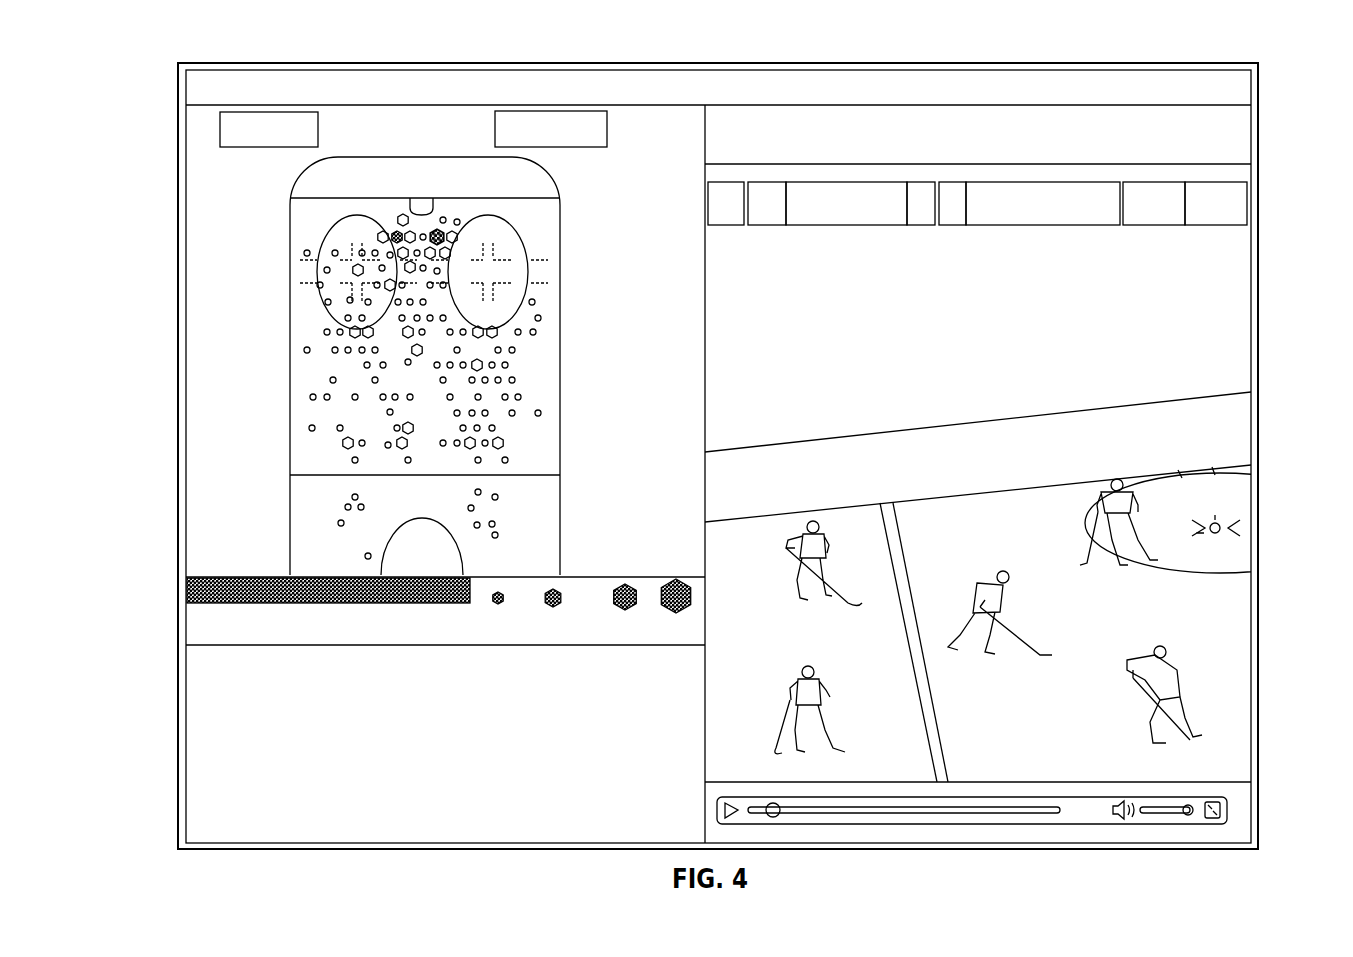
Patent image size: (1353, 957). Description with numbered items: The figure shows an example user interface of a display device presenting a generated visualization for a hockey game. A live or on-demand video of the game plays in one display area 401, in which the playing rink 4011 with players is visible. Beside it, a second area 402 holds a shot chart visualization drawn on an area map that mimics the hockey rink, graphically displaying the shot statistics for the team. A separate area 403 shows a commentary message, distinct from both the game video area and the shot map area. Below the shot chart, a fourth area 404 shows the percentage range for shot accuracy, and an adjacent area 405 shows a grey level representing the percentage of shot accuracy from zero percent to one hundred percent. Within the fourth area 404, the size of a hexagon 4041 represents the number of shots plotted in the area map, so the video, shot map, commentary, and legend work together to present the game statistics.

The display area 401 is at (1268, 206).
The second area 402 is at (331, 187).
The area 403 is at (175, 726).
The fourth area 404 is at (175, 628).
The area 405 is at (175, 593).
The hexagon 4041 is at (498, 589).
The live game video region 4011 is at (1024, 463).